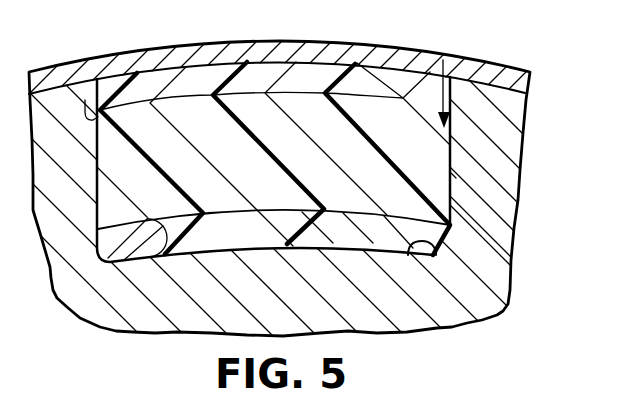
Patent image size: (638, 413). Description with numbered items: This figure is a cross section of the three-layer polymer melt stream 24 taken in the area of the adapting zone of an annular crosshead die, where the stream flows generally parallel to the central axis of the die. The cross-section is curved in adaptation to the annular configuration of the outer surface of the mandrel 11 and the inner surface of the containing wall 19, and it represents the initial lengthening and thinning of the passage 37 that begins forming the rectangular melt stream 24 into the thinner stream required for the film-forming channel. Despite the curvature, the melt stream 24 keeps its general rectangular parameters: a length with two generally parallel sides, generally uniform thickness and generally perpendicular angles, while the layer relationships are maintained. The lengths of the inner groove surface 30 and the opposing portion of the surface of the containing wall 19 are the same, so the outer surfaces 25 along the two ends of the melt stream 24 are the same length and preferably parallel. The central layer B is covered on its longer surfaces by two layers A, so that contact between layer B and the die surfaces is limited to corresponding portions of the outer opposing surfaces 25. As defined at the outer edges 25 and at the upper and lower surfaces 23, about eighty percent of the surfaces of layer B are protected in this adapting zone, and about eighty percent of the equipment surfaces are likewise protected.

The mandrel 11 is at (523, 307).
The containing wall 19 is at (214, 70).
The upper and lower surfaces 23 is at (147, 100).
The melt stream 24 is at (458, 193).
The outer surfaces 25 is at (85, 100).
The inner groove surface 30 is at (446, 233).
The passage 37 is at (443, 60).
The layer A is at (408, 82).
The layer B is at (363, 82).